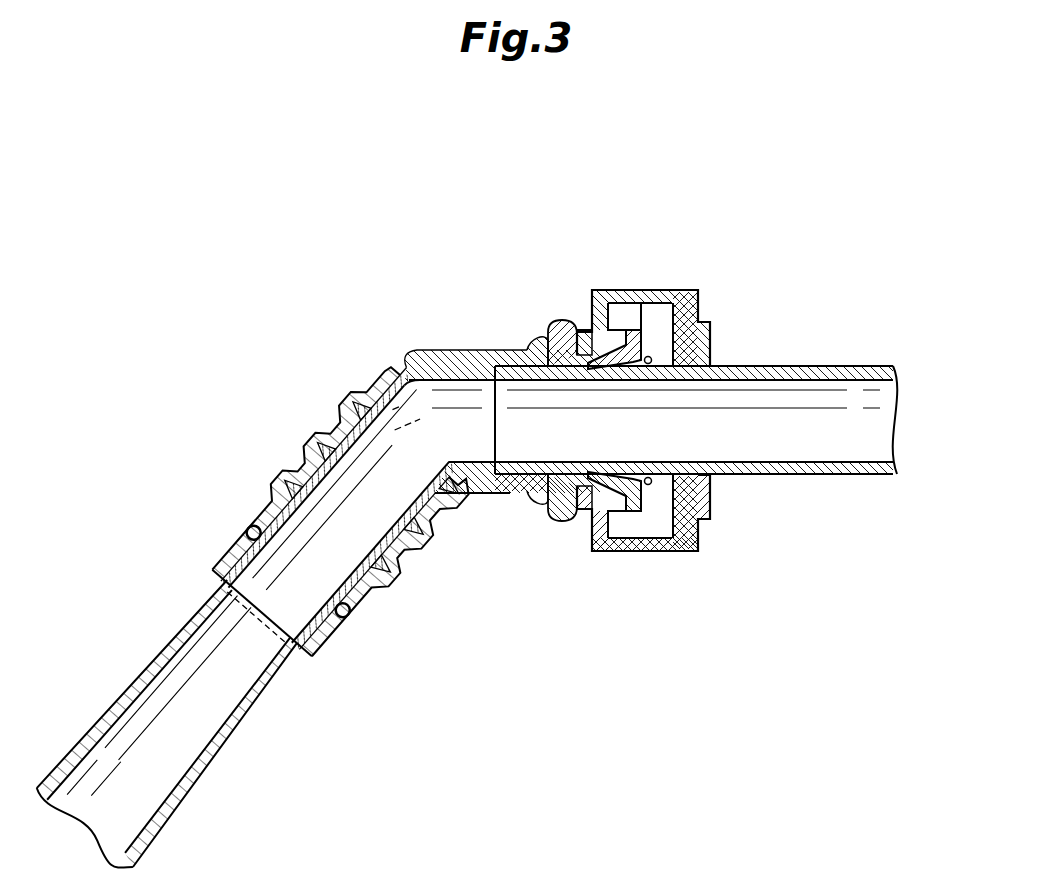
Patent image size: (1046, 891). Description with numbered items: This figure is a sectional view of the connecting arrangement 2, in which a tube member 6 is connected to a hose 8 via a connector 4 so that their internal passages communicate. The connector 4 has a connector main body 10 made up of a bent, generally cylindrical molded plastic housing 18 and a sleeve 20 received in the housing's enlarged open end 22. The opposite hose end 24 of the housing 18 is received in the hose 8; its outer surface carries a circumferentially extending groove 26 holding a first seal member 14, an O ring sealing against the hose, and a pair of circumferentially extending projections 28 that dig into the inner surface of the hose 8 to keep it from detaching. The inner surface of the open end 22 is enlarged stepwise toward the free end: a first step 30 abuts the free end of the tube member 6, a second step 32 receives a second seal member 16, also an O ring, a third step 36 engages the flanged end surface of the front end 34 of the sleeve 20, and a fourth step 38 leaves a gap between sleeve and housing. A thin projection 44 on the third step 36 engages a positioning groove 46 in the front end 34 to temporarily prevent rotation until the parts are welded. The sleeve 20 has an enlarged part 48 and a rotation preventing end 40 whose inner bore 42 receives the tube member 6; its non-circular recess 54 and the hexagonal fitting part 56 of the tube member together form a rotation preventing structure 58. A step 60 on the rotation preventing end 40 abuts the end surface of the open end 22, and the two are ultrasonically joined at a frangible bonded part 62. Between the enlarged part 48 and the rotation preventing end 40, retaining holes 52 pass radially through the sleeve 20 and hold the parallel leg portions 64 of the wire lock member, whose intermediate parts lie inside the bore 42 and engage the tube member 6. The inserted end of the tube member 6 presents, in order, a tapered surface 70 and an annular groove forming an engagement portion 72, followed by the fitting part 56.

The connecting arrangement 2 is at (562, 205).
The connector 4 is at (397, 255).
The tube member 6 is at (840, 366).
The hose 8 is at (92, 722).
The connector main body 10 is at (613, 668).
The first seal member 14 is at (242, 527).
The second seal member 16 is at (528, 338).
The housing 18 is at (640, 552).
The sleeve 20 is at (690, 552).
The open end 22 is at (662, 290).
The hose end 24 is at (253, 507).
The circumferentially extending groove 26 is at (350, 618).
The circumferentially extending projections 28 is at (285, 473).
The first step 30 is at (513, 492).
The second step 32 is at (540, 522).
The front end 34 is at (548, 323).
The third step 36 is at (575, 527).
The fourth step 38 is at (593, 550).
The rotation preventing end 40 is at (705, 520).
The inner bore 42 is at (712, 352).
The projection 44 is at (570, 313).
The positioning groove 46 is at (580, 313).
The enlarged part 48 is at (603, 300).
The retaining holes 52 is at (640, 333).
The non-circular recess 54 is at (712, 504).
The fitting part 56 is at (712, 486).
The rotation preventing structure 58 is at (800, 480).
The step 60 is at (670, 297).
The bonded part 62 is at (672, 552).
The leg portions 64 is at (622, 553).
The tapered surface 70 is at (620, 330).
The engagement portion 72 is at (700, 290).